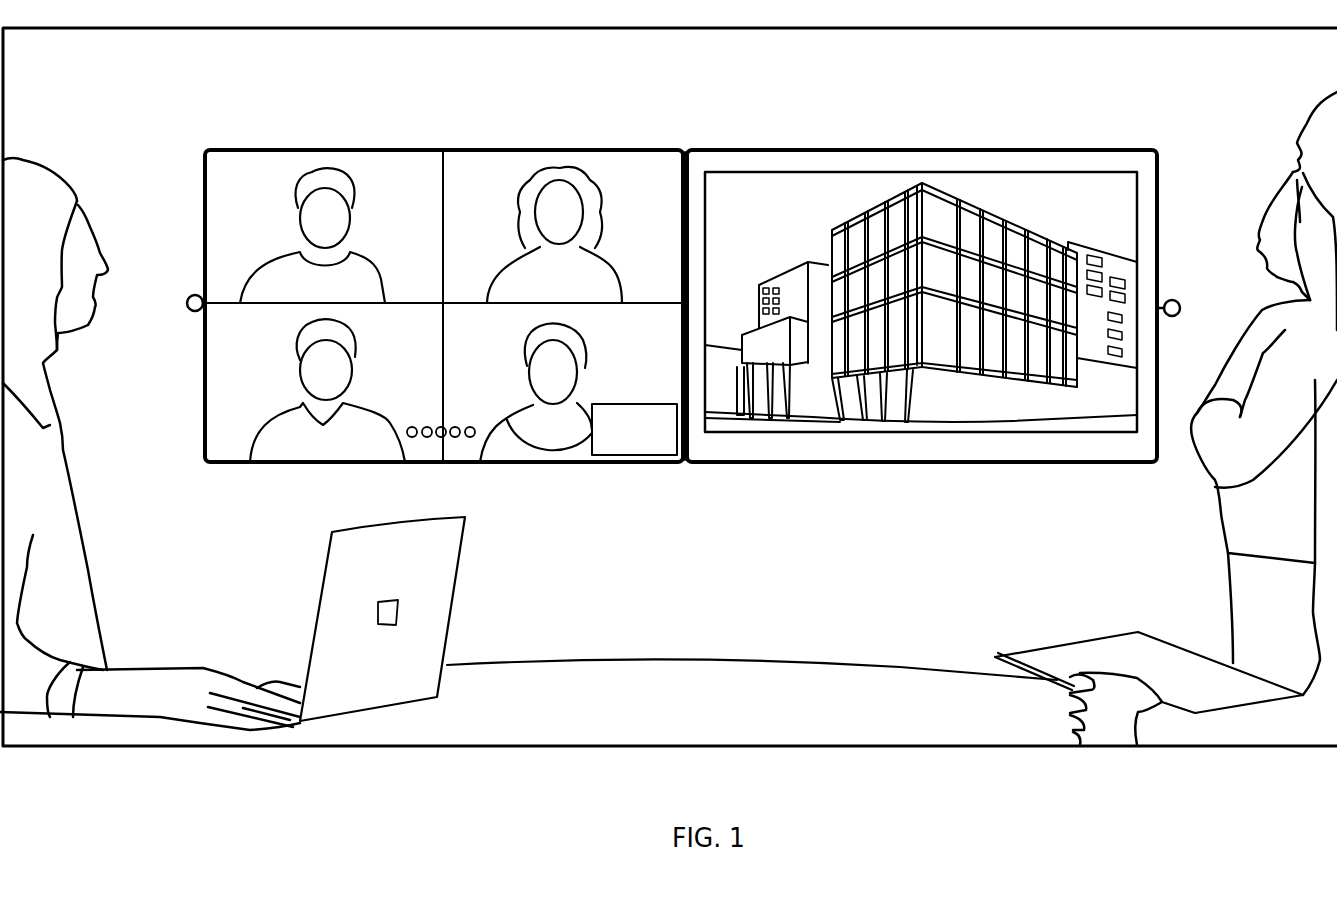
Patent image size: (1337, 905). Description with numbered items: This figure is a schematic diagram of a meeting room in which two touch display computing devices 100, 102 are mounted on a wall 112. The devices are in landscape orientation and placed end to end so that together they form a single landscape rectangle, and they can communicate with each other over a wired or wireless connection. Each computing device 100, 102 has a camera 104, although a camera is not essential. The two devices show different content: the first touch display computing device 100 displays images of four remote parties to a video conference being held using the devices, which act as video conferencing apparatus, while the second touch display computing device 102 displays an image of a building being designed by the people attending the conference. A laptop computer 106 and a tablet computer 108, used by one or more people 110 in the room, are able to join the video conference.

The touch display computing device 100 is at (458, 170).
The touch display computing device 102 is at (877, 177).
The camera 104 is at (193, 298).
The laptop computer 106 is at (442, 572).
The tablet computer 108 is at (1105, 658).
The people 110 is at (1233, 510).
The wall 112 is at (712, 143).